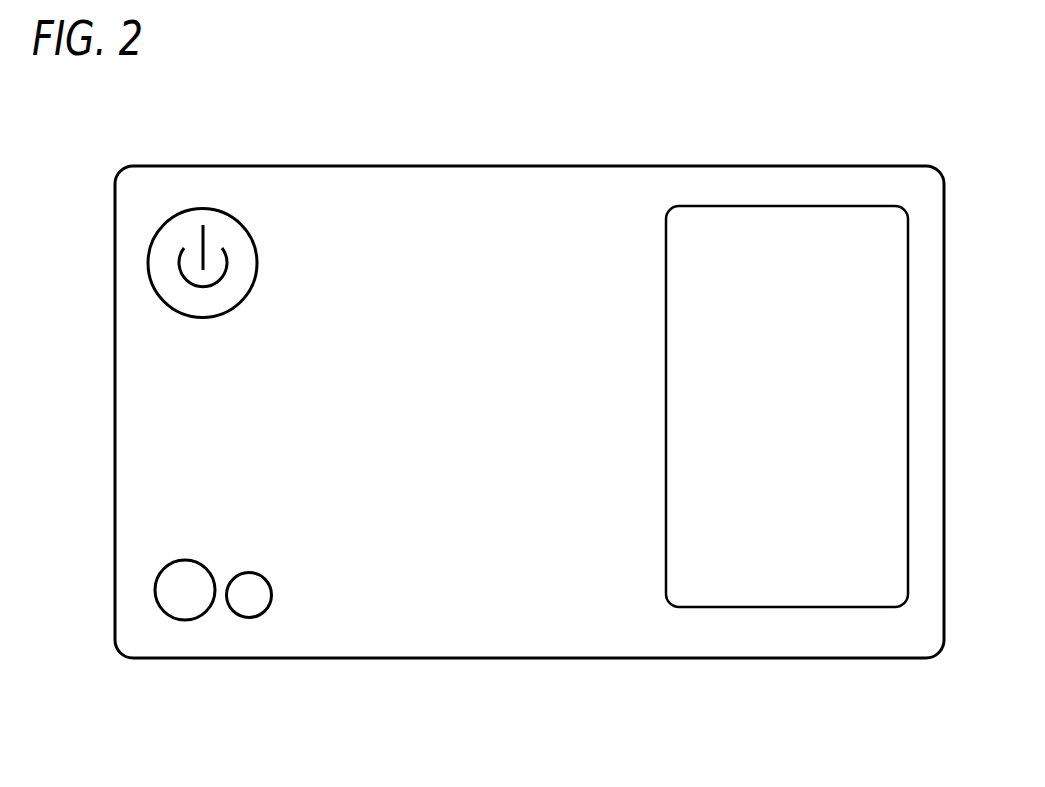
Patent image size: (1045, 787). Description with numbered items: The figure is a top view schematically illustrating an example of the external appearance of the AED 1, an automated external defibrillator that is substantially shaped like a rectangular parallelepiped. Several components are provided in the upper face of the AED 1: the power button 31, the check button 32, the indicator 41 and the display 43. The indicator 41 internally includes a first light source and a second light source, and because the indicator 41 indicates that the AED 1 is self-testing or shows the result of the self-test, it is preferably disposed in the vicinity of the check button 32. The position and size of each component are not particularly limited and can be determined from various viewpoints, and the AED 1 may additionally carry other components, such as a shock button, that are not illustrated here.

The AED 1 is at (551, 166).
The power button 31 is at (222, 209).
The check button 32 is at (172, 619).
The indicator 41 is at (243, 617).
The display 43 is at (795, 608).